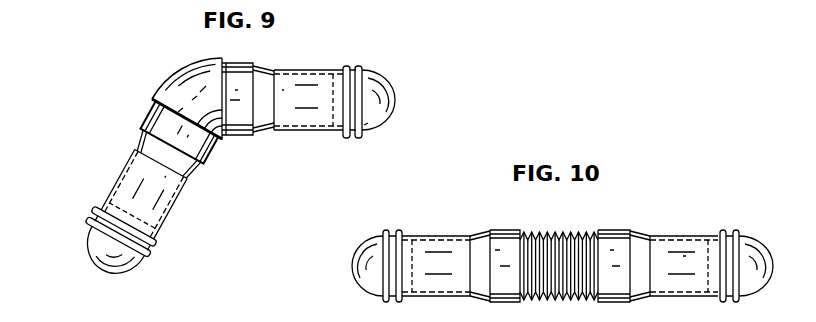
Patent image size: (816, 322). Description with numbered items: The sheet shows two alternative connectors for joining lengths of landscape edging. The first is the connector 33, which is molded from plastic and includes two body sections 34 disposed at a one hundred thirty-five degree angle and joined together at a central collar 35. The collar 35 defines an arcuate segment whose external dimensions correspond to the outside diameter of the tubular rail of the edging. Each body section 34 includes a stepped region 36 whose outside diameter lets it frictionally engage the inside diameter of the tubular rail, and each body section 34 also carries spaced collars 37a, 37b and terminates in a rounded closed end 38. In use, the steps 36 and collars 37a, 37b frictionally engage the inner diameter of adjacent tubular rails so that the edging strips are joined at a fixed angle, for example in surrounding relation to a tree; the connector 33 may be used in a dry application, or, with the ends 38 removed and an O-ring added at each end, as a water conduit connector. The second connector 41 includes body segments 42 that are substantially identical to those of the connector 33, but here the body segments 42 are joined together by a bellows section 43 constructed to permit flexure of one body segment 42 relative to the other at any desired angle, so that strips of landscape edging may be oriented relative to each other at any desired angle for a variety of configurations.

In FIG. 9, the connector 33 is at (256, 161).
In FIG. 9, the body section 34 is at (318, 66).
In FIG. 9, the central collar 35 is at (175, 72).
In FIG. 9, the stepped region 36 is at (241, 64).
In FIG. 9, the collar 37a is at (345, 140).
In FIG. 9, the collar 37b is at (362, 138).
In FIG. 9, the rounded closed end 38 is at (397, 107).
In FIG. 10, the connector 41 is at (562, 220).
In FIG. 10, the body segment 42 is at (452, 235).
In FIG. 10, the bellows section 43 is at (561, 226).